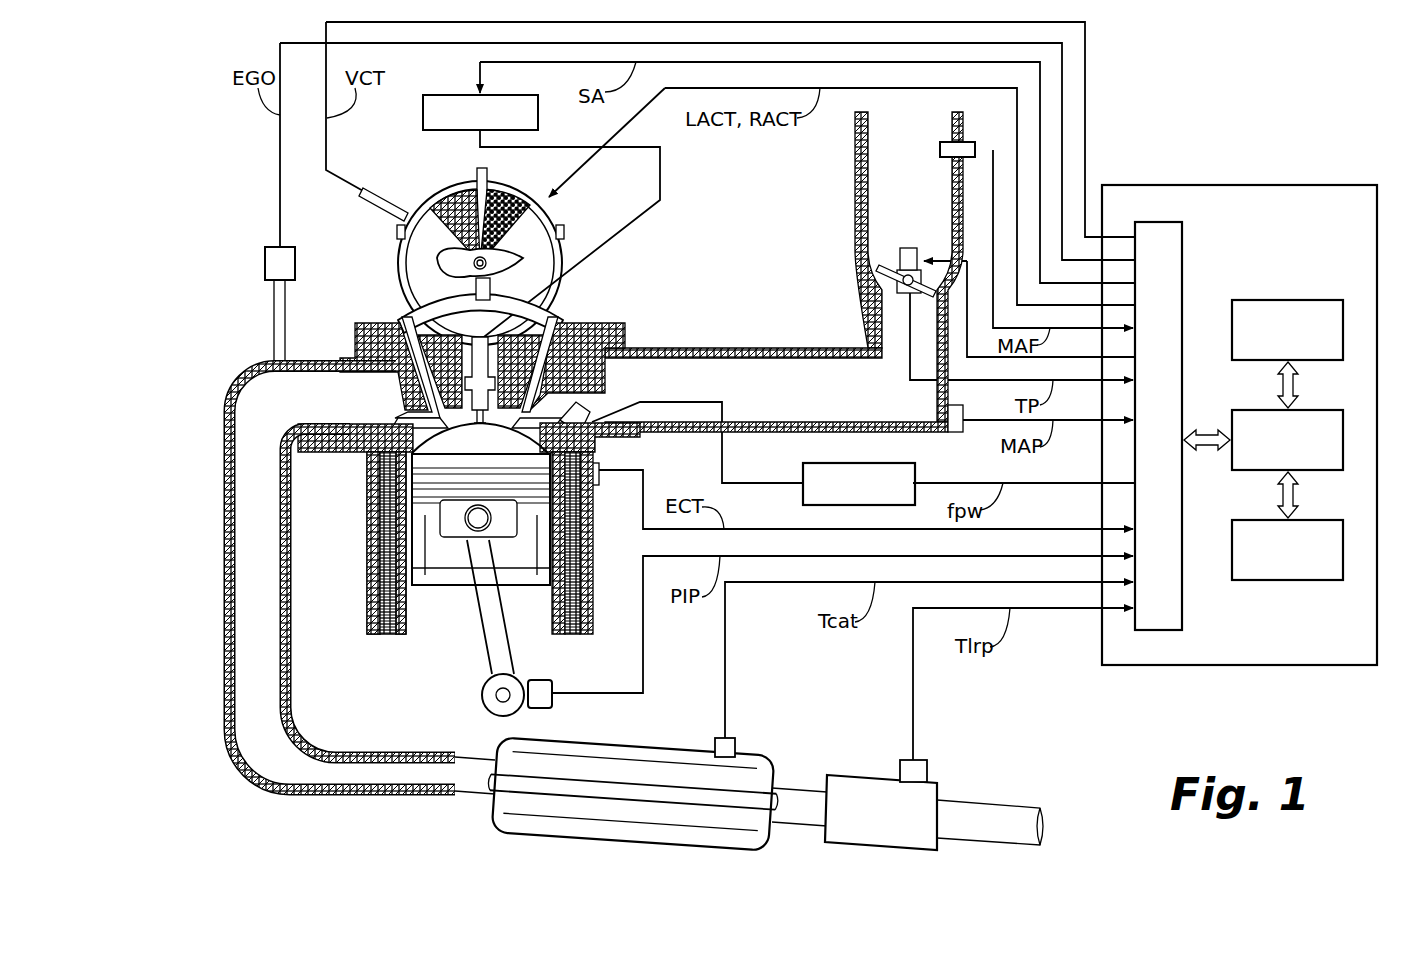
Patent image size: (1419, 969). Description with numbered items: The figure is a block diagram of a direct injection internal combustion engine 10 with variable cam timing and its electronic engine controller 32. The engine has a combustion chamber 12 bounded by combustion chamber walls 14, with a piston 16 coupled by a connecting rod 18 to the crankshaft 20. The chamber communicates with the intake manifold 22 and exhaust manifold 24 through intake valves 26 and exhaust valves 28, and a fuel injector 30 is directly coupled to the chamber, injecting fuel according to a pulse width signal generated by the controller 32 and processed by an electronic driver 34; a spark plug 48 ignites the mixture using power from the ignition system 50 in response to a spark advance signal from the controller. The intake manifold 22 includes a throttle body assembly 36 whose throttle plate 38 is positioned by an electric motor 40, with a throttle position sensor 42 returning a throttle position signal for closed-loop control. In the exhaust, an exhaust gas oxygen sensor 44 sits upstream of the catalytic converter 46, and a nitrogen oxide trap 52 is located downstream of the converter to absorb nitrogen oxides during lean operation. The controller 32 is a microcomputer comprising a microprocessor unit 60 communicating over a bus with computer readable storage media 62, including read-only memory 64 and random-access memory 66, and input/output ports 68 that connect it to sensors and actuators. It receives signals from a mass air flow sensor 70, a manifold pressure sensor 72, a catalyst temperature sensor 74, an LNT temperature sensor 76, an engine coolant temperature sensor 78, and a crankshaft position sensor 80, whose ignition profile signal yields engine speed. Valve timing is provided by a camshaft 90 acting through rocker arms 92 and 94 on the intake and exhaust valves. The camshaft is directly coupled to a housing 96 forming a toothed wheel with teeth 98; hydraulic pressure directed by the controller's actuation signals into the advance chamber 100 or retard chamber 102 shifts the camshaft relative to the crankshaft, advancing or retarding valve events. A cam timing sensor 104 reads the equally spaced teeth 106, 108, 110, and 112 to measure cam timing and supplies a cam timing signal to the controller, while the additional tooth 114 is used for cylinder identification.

The direct injection internal combustion engine 10 is at (668, 222).
The combustion chamber 12 is at (415, 442).
The combustion chamber walls 14 is at (395, 638).
The piston 16 is at (384, 590).
The connecting rod 18 is at (474, 640).
The crankshaft 20 is at (482, 695).
The intake manifold 22 is at (890, 318).
The exhaust manifold 24 is at (255, 400).
The intake valves 26 is at (548, 410).
The exhaust valves 28 is at (420, 412).
The fuel injector 30 is at (590, 445).
The electronic engine controller 32 is at (1250, 185).
The electronic driver 34 is at (810, 465).
The throttle body assembly 36 is at (894, 300).
The throttle plate 38 is at (900, 255).
The electric motor 40 is at (912, 248).
The throttle position sensor 42 is at (890, 275).
The exhaust gas oxygen sensor 44 is at (265, 255).
The catalytic converter 46 is at (602, 745).
The spark plug 48 is at (360, 327).
The ignition system 50 is at (452, 94).
The nitrogen oxide trap 52 is at (855, 775).
The microprocessor unit 60 is at (1232, 420).
The computer readable storage media 62 is at (1352, 320).
The read-only memory 64 is at (1232, 320).
The random-access memory 66 is at (1232, 530).
The input/output ports 68 is at (1160, 222).
The mass air flow sensor 70 is at (950, 142).
The manifold pressure sensor 72 is at (963, 432).
The catalyst temperature sensor 74 is at (738, 745).
The LNT temperature sensor 76 is at (930, 762).
The engine coolant temperature sensor 78 is at (600, 475).
The crankshaft position sensor 80 is at (545, 680).
The camshaft 90 is at (560, 275).
The rocker arm 92 is at (400, 315).
The rocker arm 94 is at (562, 300).
The housing 96 is at (520, 212).
The teeth 98 is at (570, 222).
The advance chamber 100 is at (551, 196).
The retard chamber 102 is at (440, 195).
The cam timing sensor 104 is at (375, 207).
The tooth 106 is at (405, 295).
The tooth 108 is at (400, 225).
The tooth 110 is at (478, 172).
The tooth 112 is at (568, 235).
The tooth 114 is at (572, 325).